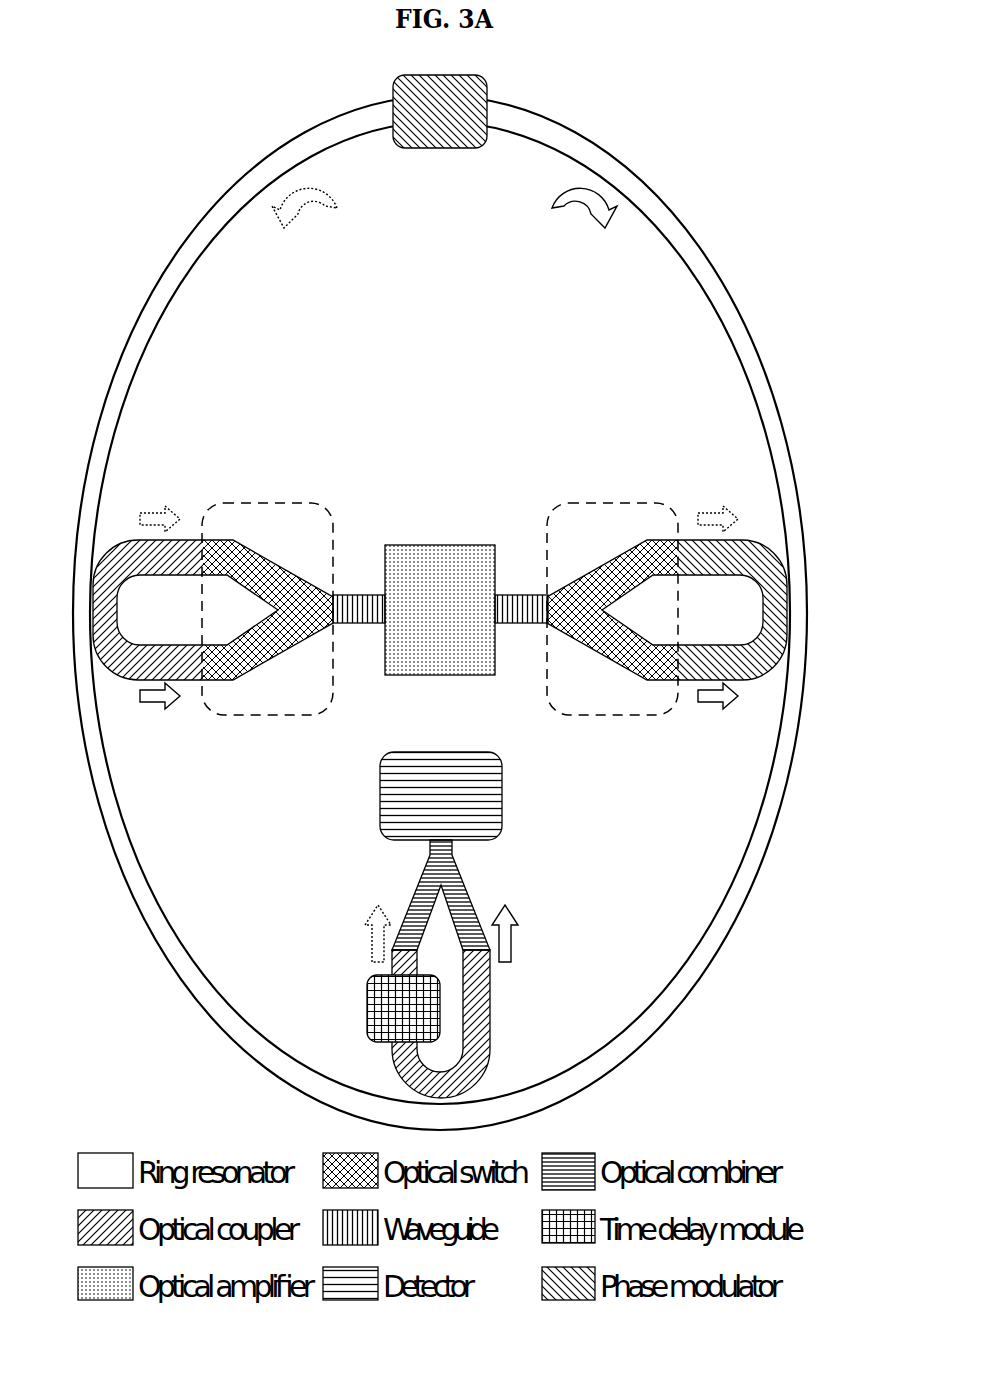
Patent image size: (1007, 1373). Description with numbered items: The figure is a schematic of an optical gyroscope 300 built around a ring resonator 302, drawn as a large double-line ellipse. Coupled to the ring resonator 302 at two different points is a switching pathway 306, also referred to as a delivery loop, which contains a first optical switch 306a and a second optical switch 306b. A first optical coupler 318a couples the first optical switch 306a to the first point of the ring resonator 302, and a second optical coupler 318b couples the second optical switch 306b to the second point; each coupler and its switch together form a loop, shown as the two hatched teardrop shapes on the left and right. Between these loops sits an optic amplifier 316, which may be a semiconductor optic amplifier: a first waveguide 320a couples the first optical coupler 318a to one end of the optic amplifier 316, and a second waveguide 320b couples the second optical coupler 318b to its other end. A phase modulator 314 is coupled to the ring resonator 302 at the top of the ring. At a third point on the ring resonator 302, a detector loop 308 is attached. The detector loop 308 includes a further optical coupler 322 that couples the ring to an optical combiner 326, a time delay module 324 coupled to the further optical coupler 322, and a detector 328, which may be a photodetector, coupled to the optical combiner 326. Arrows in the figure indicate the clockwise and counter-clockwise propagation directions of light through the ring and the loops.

The optical gyroscope 300 is at (740, 207).
The ring resonator 302 is at (257, 178).
The switching pathway 306 is at (113, 495).
The first optical switch 306a is at (285, 700).
The second optical switch 306b is at (602, 700).
The detector loop 308 is at (533, 840).
The phase modulator 314 is at (483, 88).
The optic amplifier 316 is at (408, 562).
The first optical coupler 318a is at (193, 680).
The second optical coupler 318b is at (690, 680).
The first waveguide 320a is at (362, 595).
The second waveguide 320b is at (524, 595).
The further optical coupler 322 is at (407, 1060).
The time delay module 324 is at (375, 990).
The optical combiner 326 is at (440, 853).
The detector 328 is at (393, 802).